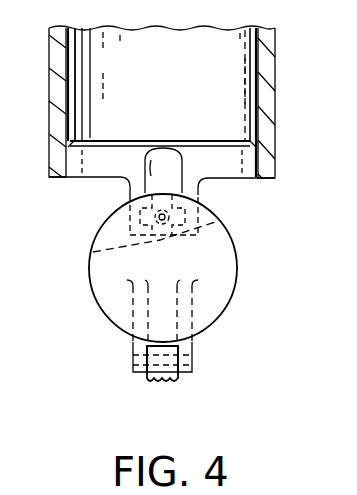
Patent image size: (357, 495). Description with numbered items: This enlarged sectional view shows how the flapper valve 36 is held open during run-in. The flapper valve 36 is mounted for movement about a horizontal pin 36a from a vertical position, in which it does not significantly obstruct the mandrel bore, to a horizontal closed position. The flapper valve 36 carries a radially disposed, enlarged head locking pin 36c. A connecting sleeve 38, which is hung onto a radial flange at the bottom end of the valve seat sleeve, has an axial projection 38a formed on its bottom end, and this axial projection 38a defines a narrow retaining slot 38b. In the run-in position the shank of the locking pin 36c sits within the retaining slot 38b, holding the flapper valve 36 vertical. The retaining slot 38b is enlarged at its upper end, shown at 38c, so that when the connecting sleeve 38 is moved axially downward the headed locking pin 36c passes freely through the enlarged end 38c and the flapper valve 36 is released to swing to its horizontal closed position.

The flapper valve 36 is at (238, 262).
The horizontal pin 36a is at (192, 358).
The enlarged head locking pin 36c is at (215, 222).
The connecting sleeve 38 is at (256, 113).
The axial projection 38a is at (200, 192).
The retaining slot 38b is at (88, 253).
The enlarged upper end of slot 38c is at (153, 163).